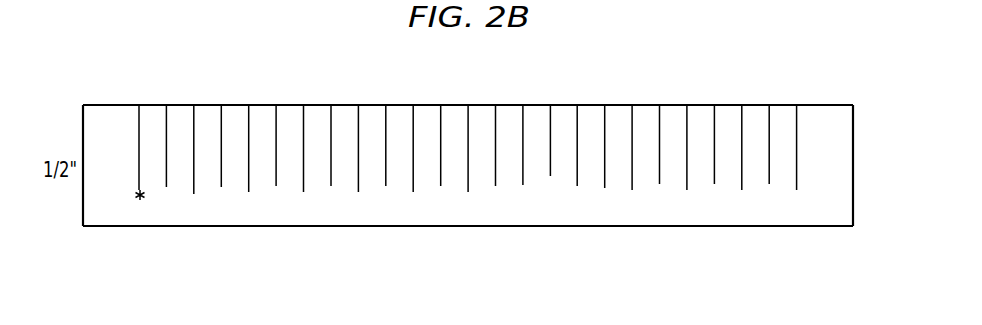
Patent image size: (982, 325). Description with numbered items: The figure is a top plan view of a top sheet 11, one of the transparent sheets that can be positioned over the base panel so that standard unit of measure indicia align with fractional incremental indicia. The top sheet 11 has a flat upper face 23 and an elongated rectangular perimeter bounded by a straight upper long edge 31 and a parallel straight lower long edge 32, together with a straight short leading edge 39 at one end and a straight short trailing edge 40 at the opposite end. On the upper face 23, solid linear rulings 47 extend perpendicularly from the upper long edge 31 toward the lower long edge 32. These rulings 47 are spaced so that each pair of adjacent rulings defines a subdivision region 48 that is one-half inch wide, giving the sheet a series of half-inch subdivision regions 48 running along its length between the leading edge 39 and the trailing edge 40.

The top sheet 11 is at (118, 205).
The upper face 23 is at (835, 190).
The upper long edge 31 is at (673, 103).
The lower long edge 32 is at (735, 226).
The leading edge 39 is at (83, 128).
The trailing edge 40 is at (853, 143).
The solid linear rulings 47 is at (523, 185).
The subdivision regions 48 is at (345, 107).